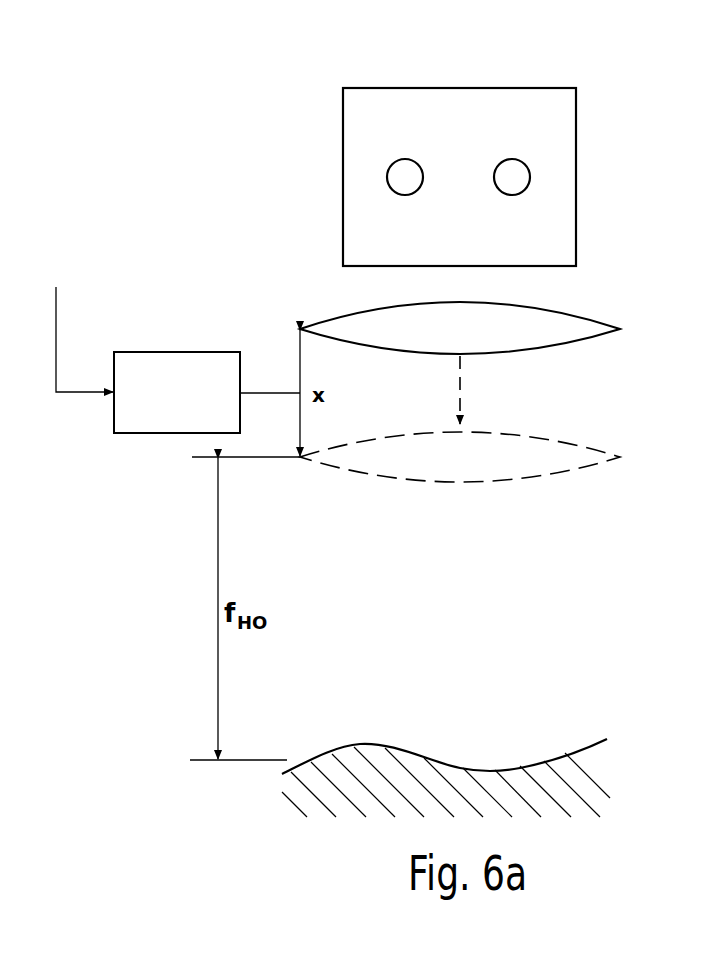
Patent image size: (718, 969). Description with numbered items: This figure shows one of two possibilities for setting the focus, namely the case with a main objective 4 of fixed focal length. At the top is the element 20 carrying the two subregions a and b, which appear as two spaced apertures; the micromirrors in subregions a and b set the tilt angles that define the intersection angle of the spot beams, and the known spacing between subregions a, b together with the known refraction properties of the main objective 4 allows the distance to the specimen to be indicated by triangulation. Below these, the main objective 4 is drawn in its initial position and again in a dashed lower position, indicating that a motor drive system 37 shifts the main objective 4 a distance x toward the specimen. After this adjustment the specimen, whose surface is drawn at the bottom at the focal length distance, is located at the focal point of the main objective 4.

The plate with two apertures 20 is at (462, 122).
The subregion of micromirror array a is at (395, 177).
The subregion of micromirror array b is at (525, 177).
The main objective 4 is at (565, 332).
The motor drive system 37 is at (140, 415).